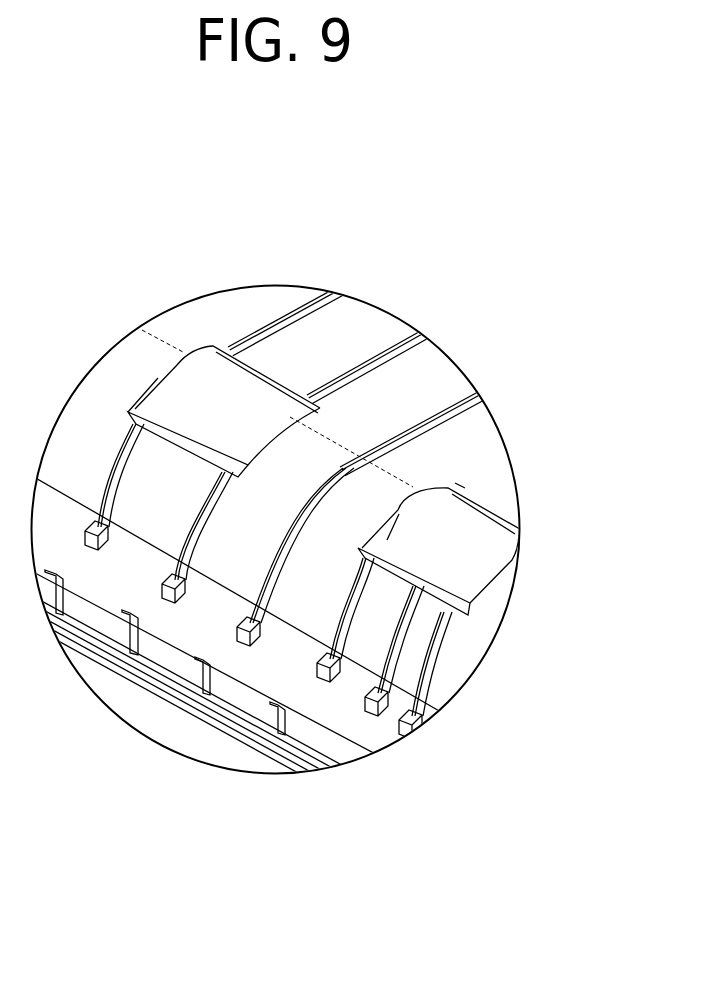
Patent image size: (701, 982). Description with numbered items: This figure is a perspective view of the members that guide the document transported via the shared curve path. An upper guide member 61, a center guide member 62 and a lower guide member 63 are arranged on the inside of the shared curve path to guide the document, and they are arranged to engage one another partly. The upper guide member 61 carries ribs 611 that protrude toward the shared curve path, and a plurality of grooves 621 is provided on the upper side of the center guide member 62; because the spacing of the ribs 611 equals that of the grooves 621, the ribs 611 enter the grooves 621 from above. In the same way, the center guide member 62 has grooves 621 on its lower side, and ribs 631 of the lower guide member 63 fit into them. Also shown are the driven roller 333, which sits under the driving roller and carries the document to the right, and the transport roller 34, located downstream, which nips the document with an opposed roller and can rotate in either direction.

The driven roller 333 is at (195, 358).
The ribs 611 is at (267, 553).
The upper guide member 61 is at (463, 663).
The center guide member 62 is at (380, 737).
The grooves 621 is at (287, 700).
The lower guide member 63 is at (337, 760).
The ribs 631 is at (122, 655).
The transport roller 34 is at (203, 705).